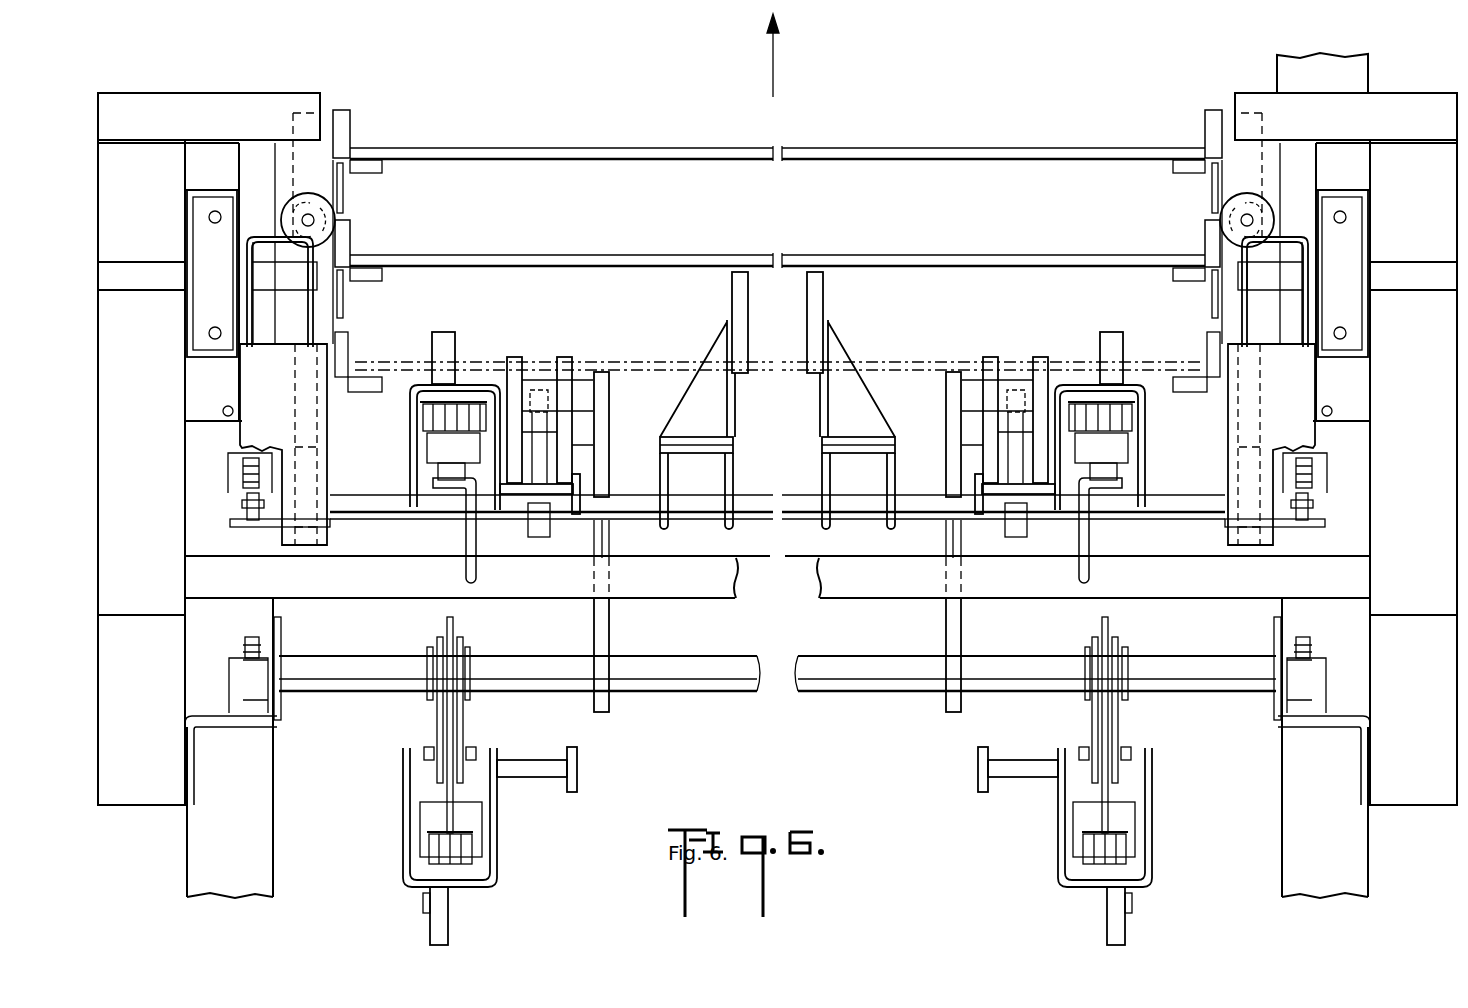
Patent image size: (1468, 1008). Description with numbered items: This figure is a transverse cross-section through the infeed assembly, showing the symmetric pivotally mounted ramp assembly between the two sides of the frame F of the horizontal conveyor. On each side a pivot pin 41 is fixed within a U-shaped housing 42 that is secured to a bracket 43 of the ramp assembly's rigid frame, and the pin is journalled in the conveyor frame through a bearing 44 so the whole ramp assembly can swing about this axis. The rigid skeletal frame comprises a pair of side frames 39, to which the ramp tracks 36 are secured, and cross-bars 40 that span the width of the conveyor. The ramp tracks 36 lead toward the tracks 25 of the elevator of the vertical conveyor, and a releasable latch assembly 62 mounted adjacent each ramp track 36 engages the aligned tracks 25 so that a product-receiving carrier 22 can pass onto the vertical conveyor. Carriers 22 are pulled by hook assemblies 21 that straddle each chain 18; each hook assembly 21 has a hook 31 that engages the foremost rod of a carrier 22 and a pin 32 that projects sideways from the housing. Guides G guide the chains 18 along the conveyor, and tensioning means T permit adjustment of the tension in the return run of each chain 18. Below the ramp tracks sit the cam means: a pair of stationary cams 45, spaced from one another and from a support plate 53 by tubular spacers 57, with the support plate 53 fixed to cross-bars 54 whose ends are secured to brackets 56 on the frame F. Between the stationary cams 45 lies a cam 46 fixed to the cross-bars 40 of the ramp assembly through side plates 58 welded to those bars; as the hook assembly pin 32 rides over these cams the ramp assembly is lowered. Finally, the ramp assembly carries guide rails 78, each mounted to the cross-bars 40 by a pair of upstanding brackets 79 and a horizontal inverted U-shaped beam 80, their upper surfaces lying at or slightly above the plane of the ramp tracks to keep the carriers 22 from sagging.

The chain 18 is at (440, 416).
The hook assembly 21 is at (406, 443).
The product-receiving carrier 22 is at (1068, 148).
The track 25 is at (1178, 170).
The hook 31 is at (448, 334).
The pin 32 is at (520, 500).
The ramp track 36 is at (370, 374).
The side frame 39 is at (316, 532).
The cross-bar 40 is at (354, 505).
The pivot pin 41 is at (145, 268).
The U-shaped housing 42 is at (255, 233).
The bracket 43 is at (245, 444).
The bearing 44 is at (203, 321).
The stationary cam 45 is at (513, 357).
The cam 46 is at (548, 447).
The support plate 53 is at (611, 394).
The cross-bar 54 is at (645, 666).
The bracket 56 is at (1366, 712).
The tubular spacer 57 is at (538, 388).
The side plate 58 is at (1003, 530).
The releasable latch assembly 62 is at (320, 198).
The guide rail 78 is at (735, 296).
The upstanding bracket 79 is at (736, 417).
The horizontal inverted U-shaped beam 80 is at (736, 474).
The frame F is at (830, 597).
The guide G is at (466, 546).
The tensioning means T is at (415, 722).